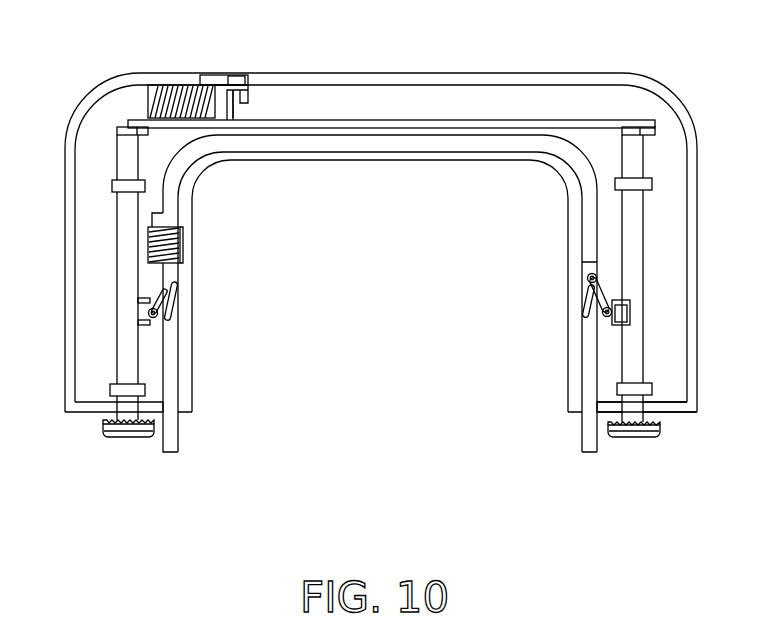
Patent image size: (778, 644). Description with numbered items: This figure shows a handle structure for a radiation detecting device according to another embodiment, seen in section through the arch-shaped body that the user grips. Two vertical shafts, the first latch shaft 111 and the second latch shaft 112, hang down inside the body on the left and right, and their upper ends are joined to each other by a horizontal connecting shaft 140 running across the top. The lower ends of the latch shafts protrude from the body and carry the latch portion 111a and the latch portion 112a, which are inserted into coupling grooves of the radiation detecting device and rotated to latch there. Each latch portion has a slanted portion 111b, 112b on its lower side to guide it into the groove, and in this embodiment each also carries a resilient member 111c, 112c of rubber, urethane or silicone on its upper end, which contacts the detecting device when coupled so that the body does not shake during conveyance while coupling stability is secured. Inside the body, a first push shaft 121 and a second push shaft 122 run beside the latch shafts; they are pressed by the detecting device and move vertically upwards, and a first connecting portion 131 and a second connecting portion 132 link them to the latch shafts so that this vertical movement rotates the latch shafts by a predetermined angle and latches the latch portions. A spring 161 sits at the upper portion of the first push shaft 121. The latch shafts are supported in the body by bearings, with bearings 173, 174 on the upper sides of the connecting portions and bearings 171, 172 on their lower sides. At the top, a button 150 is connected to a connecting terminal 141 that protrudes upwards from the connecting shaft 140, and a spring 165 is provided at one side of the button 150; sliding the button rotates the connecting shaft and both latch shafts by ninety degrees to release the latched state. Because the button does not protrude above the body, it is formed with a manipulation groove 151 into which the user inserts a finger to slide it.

The first latch shaft 111 is at (125, 312).
The latch portion 111a is at (127, 440).
The slanted portion 111b is at (103, 440).
The resilient member 111c is at (103, 422).
The second latch shaft 112 is at (642, 347).
The latch portion 112a is at (632, 440).
The slanted portion 112b is at (658, 438).
The resilient member 112c is at (660, 423).
The first push shaft 121 is at (178, 378).
The second push shaft 122 is at (590, 377).
The first connecting portion 131 is at (160, 303).
The second connecting portion 132 is at (590, 300).
The connecting shaft 140 is at (407, 128).
The connecting terminal 141 is at (234, 112).
The button 150 is at (232, 76).
The manipulation groove 151 is at (243, 77).
The spring 161 is at (183, 245).
The spring 165 is at (176, 92).
The bearing 171 is at (110, 389).
The bearing 172 is at (652, 388).
The bearing 173 is at (112, 186).
The bearing 174 is at (652, 185).